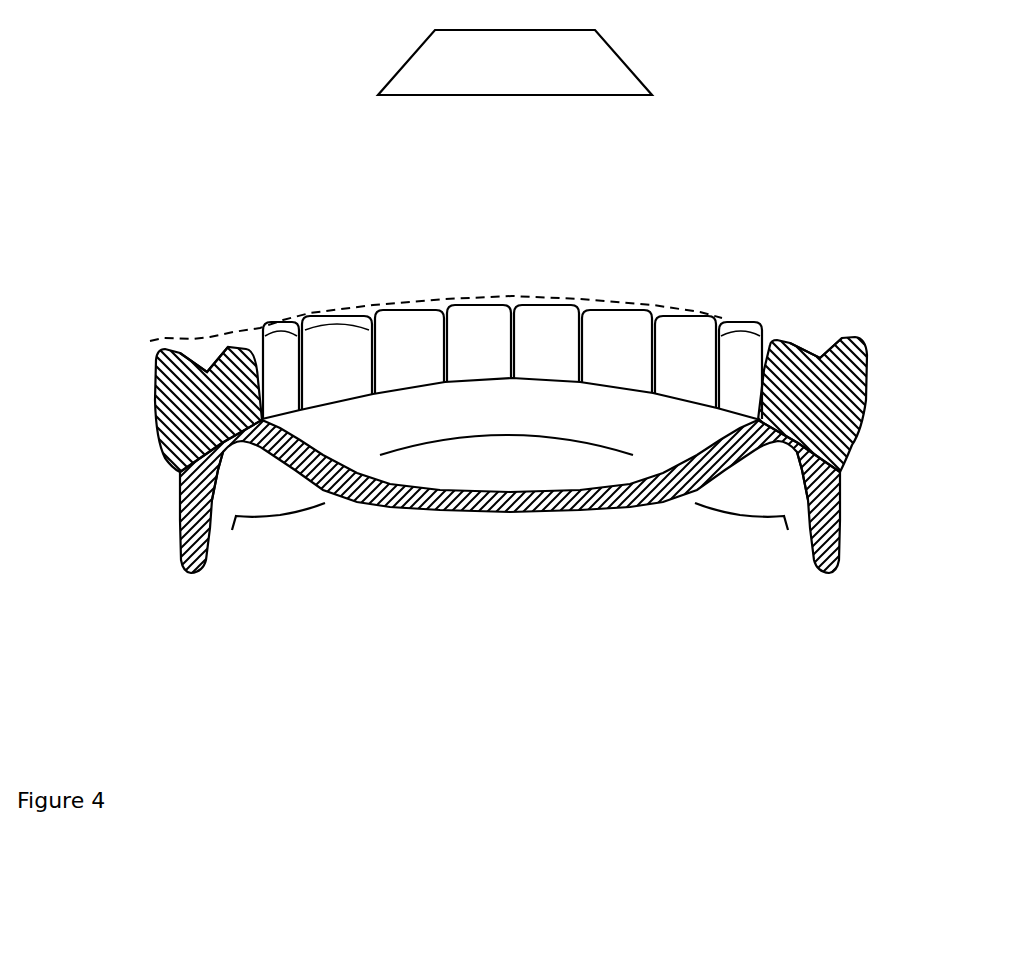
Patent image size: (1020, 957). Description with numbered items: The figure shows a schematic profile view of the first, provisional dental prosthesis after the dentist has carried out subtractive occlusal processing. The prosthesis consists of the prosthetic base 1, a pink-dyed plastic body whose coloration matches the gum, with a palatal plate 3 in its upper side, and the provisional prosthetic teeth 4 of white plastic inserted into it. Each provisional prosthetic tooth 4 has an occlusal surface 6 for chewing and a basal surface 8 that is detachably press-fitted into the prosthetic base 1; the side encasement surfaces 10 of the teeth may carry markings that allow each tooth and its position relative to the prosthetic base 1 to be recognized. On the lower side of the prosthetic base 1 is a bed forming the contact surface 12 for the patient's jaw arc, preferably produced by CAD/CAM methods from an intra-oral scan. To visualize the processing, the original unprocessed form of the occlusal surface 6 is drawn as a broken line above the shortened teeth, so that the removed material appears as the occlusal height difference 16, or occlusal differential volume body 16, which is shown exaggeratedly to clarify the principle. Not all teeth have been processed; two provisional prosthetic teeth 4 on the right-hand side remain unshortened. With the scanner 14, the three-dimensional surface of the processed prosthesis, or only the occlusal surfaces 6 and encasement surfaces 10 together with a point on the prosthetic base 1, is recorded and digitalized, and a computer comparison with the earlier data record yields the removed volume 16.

The prosthetic base 1 is at (542, 408).
The palatal plate 3 is at (500, 497).
The provisional prosthetic teeth 4 is at (417, 330).
The occlusal surface 6 is at (207, 370).
The basal surface 8 is at (223, 450).
The side encasement surfaces 10 is at (157, 408).
The contact surface 12 is at (248, 463).
The scanner 14 is at (484, 64).
The occlusal height difference 16 is at (273, 317).